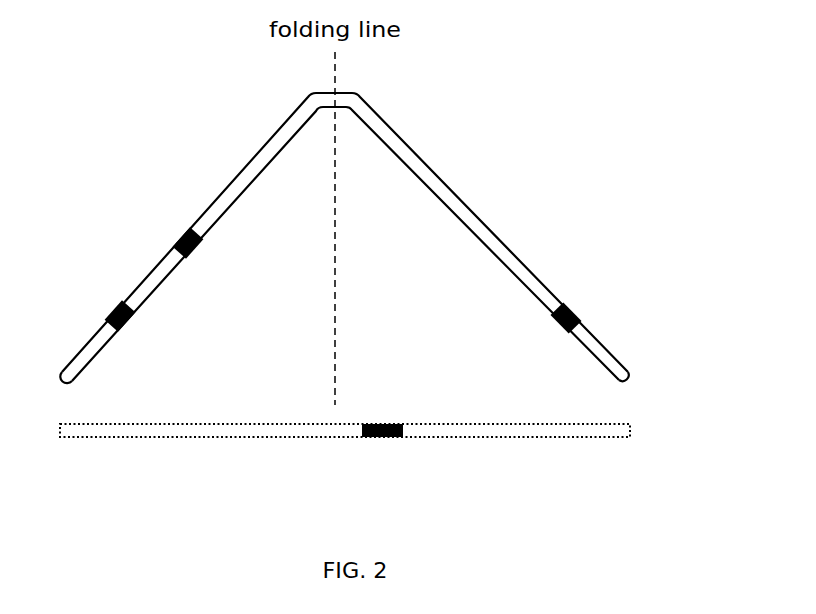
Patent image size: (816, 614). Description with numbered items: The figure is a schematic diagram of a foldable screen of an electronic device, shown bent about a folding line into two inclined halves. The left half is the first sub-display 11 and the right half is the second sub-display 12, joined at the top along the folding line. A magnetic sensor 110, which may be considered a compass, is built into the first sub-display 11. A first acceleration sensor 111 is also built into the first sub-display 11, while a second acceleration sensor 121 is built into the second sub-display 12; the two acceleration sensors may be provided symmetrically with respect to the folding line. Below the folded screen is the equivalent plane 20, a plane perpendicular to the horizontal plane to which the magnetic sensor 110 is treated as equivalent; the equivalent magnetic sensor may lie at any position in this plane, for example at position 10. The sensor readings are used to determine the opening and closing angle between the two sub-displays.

The position of the equivalent magnetic sensor 10 is at (382, 438).
The first sub-display 11 is at (253, 162).
The second sub-display 12 is at (458, 198).
The equivalent plane 20 is at (225, 443).
The magnetic sensor 110 is at (180, 237).
The first acceleration sensor 111 is at (112, 312).
The second acceleration sensor 121 is at (582, 318).